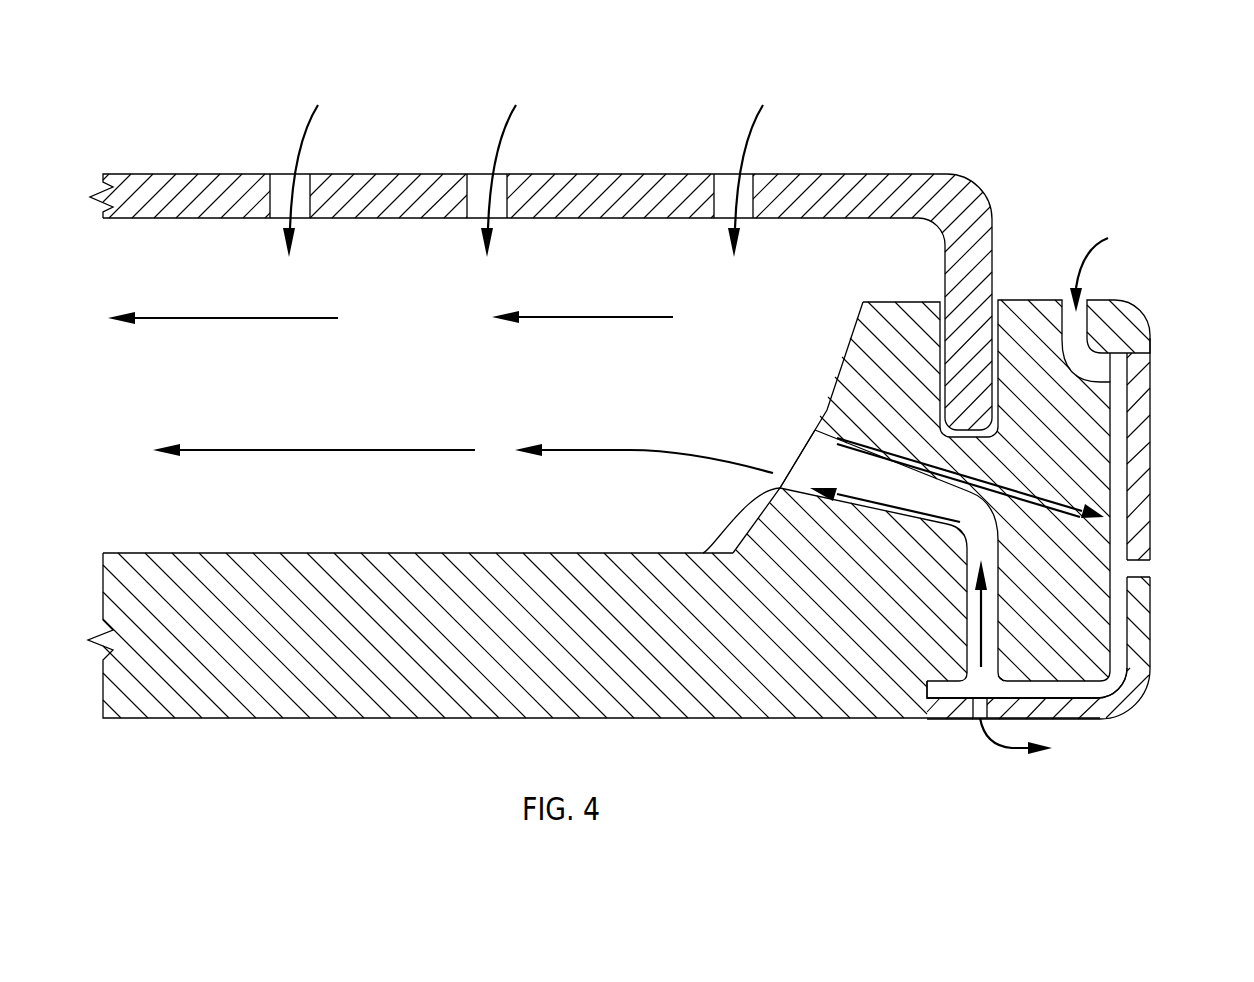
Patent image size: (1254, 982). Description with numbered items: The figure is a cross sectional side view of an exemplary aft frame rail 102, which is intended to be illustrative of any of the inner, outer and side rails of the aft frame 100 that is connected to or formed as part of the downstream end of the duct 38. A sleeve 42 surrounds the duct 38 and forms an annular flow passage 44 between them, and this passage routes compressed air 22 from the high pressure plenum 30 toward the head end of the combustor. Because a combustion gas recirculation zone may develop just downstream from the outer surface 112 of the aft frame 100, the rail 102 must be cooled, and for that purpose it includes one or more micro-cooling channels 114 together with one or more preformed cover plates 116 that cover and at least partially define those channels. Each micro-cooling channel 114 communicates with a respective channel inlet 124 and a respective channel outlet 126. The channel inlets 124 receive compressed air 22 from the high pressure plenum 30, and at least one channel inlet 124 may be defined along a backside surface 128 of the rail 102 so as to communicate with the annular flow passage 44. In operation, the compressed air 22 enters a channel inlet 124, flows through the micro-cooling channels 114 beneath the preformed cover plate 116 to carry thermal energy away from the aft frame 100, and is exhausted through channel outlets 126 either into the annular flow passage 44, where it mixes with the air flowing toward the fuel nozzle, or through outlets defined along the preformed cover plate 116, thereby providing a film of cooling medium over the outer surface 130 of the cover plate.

The compressed air 22 is at (298, 138).
The high pressure plenum 30 is at (1122, 74).
The duct 38 is at (303, 697).
The sleeve 42 is at (887, 158).
The annular flow passage 44 is at (430, 354).
The aft frame 100 is at (796, 421).
The aft frame rail 102 is at (1017, 270).
The outer surface 112 is at (1150, 340).
The micro-cooling channel 114 is at (1118, 492).
The preformed cover plate 116 is at (1140, 642).
The channel inlet 124 is at (1084, 298).
The channel outlet 126 is at (814, 420).
The backside surface 128 is at (807, 447).
The outer surface 130 is at (1078, 722).